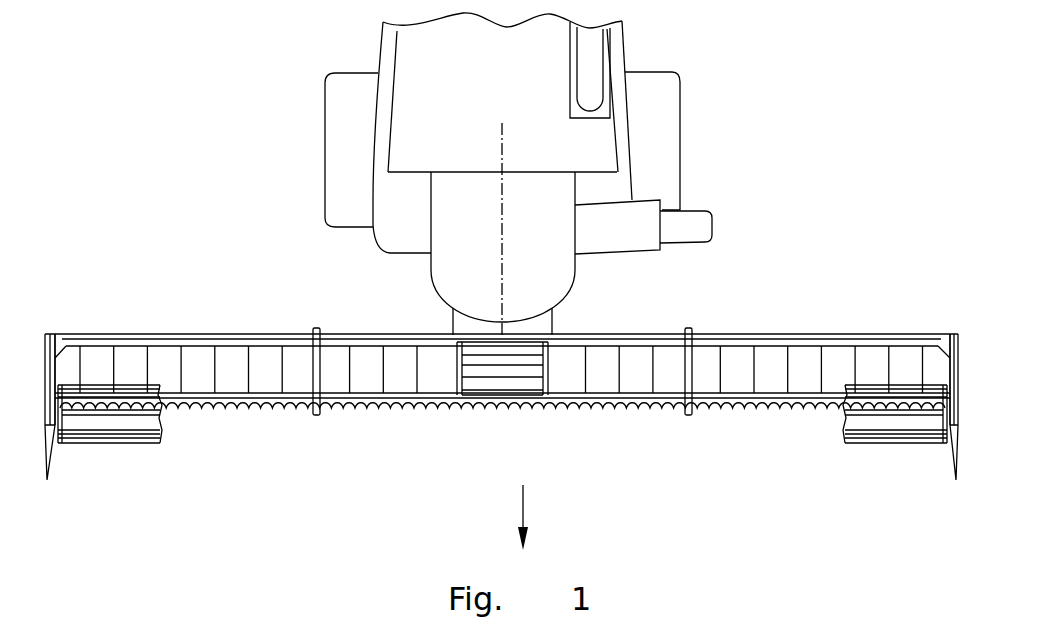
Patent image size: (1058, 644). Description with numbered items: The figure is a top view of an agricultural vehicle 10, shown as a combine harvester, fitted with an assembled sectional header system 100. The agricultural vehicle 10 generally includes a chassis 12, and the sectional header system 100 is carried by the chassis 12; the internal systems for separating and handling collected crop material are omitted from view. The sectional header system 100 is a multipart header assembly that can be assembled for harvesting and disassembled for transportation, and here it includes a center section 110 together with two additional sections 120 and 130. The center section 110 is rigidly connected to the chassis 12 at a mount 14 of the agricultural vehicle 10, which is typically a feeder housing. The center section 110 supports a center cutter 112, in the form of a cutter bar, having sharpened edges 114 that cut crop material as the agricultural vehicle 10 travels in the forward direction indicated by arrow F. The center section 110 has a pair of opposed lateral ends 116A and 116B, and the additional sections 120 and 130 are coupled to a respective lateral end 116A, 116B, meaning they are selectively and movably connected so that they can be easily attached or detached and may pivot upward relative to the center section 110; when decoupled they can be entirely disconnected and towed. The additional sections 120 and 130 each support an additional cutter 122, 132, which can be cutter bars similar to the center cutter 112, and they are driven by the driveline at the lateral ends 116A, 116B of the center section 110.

The agricultural vehicle 10 is at (756, 83).
The chassis 12 is at (683, 172).
The mount 14 is at (555, 323).
The sectional header system 100 is at (424, 430).
The center section 110 is at (570, 373).
The center cutter 112 is at (555, 410).
The sharpened edges 114 is at (537, 412).
The lateral end 116A is at (692, 366).
The lateral end 116B is at (322, 363).
The additional section 120 is at (810, 340).
The additional cutter 122 is at (807, 412).
The additional section 130 is at (233, 340).
The additional cutter 132 is at (225, 408).